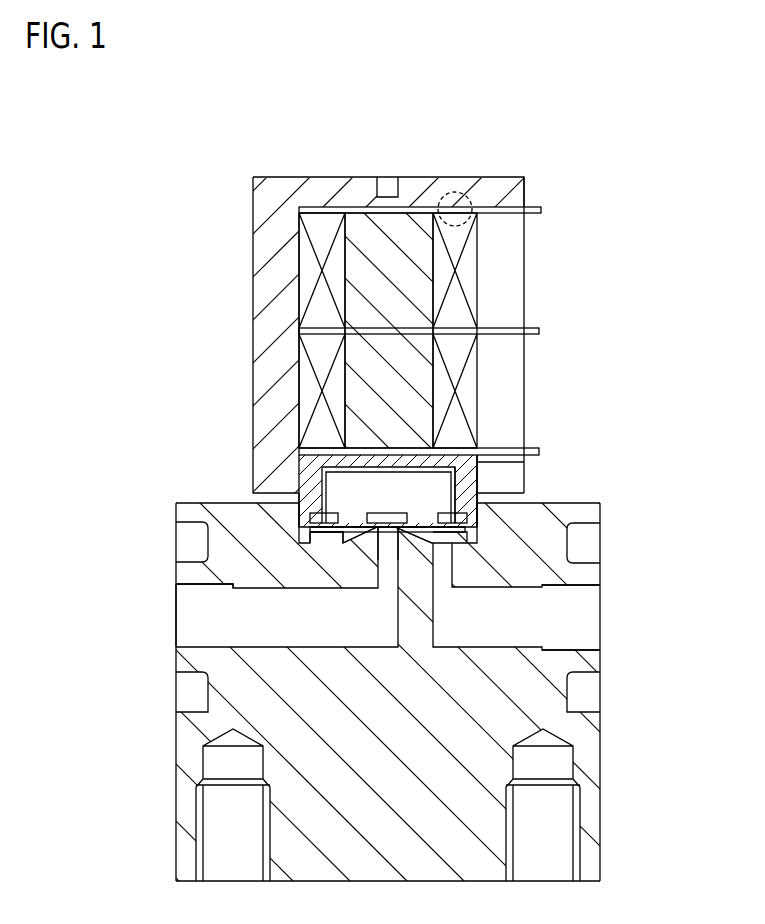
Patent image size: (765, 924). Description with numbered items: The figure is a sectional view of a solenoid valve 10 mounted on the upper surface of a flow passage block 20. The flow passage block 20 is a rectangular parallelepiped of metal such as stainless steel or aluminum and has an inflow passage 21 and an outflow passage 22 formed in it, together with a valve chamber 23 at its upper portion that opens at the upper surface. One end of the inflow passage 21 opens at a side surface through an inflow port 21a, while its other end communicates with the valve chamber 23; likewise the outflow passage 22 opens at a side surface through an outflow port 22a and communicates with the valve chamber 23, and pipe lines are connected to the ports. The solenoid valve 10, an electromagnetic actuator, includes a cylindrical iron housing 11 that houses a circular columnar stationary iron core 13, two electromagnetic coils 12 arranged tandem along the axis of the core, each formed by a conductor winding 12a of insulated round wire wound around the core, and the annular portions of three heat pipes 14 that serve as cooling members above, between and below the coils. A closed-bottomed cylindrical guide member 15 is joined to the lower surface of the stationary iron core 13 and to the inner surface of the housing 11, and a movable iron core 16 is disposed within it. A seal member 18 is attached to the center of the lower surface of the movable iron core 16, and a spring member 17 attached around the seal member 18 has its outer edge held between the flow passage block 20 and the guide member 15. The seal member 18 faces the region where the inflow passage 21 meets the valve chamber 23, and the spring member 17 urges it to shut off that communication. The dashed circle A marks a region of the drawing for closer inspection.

The solenoid valve 10 is at (504, 172).
The housing 11 is at (527, 190).
The electromagnetic coil 12 is at (292, 260).
The conductor winding 12a is at (297, 270).
The stationary iron core 13 is at (358, 222).
The heat pipe 14 is at (539, 452).
The guide member 15 is at (472, 500).
The movable iron core 16 is at (320, 470).
The spring member 17 is at (463, 533).
The seal member 18 is at (390, 530).
The flow passage block 20 is at (382, 692).
The inflow passage 21 is at (250, 644).
The inflow port 21a is at (185, 588).
The outflow passage 22 is at (530, 647).
The outflow port 22a is at (598, 590).
The valve chamber 23 is at (305, 548).
The enlarged region A is at (446, 193).